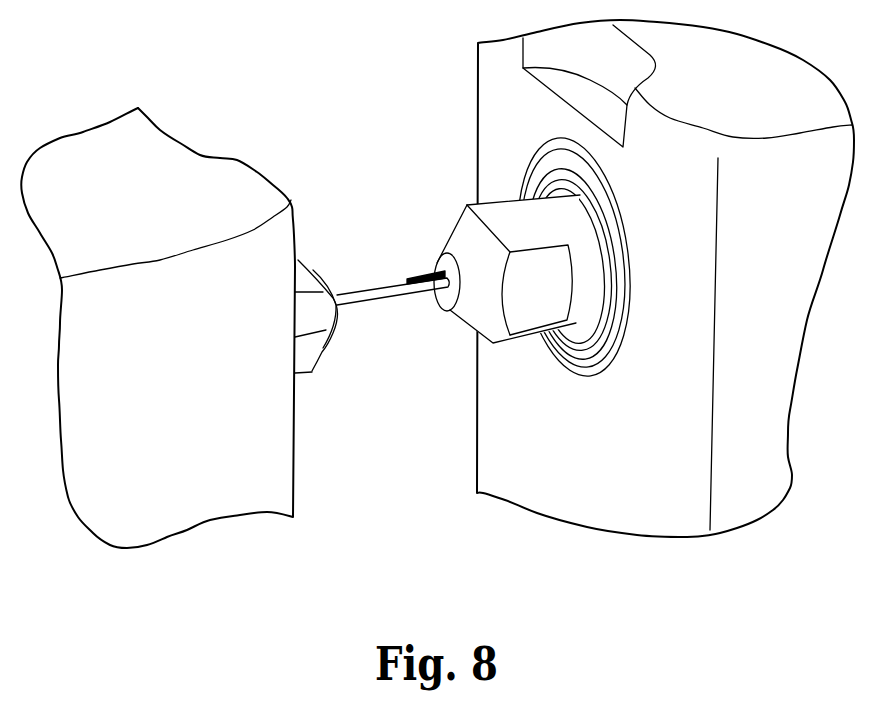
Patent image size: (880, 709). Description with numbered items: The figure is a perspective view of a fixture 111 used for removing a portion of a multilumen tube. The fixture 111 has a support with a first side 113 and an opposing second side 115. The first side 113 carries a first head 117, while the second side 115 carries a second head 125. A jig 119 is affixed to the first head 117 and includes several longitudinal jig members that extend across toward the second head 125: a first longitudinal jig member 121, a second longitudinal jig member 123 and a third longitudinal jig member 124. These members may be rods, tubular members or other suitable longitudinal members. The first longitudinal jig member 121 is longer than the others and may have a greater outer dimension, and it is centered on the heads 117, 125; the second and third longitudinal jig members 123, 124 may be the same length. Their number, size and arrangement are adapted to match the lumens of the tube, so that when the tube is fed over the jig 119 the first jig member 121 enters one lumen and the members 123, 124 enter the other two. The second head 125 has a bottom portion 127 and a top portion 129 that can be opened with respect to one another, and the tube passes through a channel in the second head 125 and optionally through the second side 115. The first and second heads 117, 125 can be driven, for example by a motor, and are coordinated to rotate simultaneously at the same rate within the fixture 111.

The fixture 111 is at (370, 110).
The first side 113 is at (668, 512).
The second side 115 is at (207, 496).
The first head 117 is at (534, 328).
The jig 119 is at (362, 292).
The first longitudinal jig member 121 is at (392, 294).
The second longitudinal jig member 123 is at (416, 278).
The third longitudinal jig member 124 is at (428, 272).
The second head 125 is at (313, 380).
The bottom portion 127 is at (320, 348).
The top portion 129 is at (311, 311).